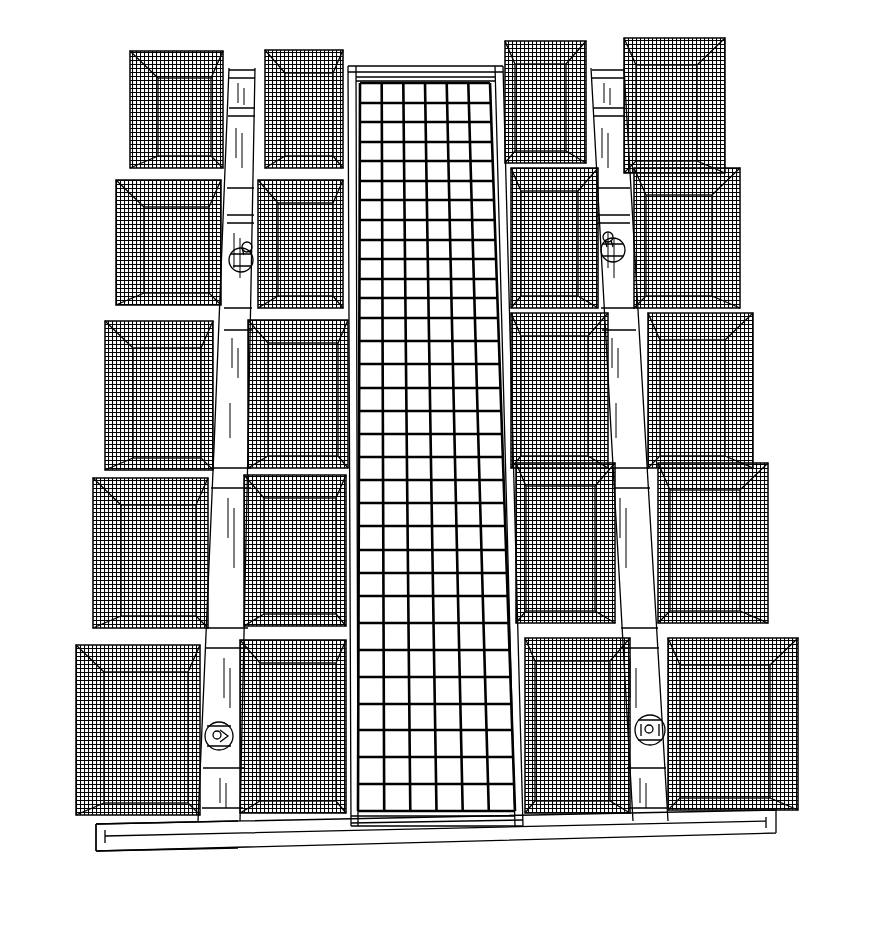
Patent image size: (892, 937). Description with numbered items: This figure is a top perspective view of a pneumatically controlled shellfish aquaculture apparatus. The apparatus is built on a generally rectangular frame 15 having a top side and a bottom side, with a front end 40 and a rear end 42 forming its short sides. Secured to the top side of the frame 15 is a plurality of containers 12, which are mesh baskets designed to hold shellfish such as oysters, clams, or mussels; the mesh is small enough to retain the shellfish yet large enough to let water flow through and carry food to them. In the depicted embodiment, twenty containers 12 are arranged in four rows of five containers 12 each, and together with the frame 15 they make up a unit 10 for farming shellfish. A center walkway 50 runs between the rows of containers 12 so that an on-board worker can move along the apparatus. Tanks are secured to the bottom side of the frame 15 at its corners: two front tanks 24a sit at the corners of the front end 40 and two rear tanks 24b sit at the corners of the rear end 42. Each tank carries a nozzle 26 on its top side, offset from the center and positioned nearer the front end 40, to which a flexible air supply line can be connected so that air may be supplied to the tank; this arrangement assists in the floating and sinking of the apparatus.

The unit 10 is at (107, 59).
The container 12 is at (717, 128).
The frame 15 is at (203, 845).
The front tank 24a is at (635, 683).
The rear tank 24b is at (604, 125).
The nozzle 26 is at (600, 229).
The front end 40 is at (609, 834).
The rear end 42 is at (409, 54).
The center walkway 50 is at (347, 833).